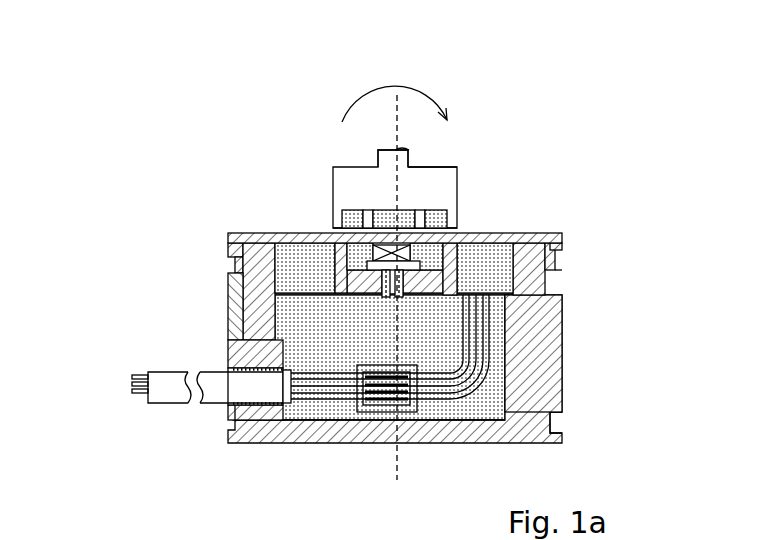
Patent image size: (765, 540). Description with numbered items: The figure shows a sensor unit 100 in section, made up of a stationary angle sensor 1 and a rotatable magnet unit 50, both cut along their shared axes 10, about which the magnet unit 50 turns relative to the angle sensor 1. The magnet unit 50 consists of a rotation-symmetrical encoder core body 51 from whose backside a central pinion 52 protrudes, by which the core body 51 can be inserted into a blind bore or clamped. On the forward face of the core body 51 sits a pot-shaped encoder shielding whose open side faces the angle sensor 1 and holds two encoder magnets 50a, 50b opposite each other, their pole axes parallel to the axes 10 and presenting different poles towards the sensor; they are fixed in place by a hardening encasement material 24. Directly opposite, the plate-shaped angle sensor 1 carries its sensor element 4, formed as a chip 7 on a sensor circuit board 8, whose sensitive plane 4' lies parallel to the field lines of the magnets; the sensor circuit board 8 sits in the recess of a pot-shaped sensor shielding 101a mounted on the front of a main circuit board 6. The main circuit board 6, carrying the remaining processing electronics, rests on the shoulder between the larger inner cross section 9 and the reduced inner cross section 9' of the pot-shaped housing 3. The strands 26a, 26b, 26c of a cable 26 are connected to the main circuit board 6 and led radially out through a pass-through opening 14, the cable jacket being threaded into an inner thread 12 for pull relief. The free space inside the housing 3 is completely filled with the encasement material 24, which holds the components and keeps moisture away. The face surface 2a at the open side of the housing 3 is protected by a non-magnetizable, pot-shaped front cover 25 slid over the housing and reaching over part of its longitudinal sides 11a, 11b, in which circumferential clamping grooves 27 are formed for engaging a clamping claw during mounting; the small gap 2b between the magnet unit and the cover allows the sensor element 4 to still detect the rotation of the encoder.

The angle sensor 1 is at (592, 290).
The face surface 2a is at (567, 236).
The gap between knob and cover 2b is at (474, 218).
The housing 3 is at (230, 435).
The sensor element 4 is at (537, 207).
The sensitive plane 4' is at (241, 189).
The main circuit board 6 is at (300, 290).
The chip 7 is at (395, 281).
The sensor circuit board 8 is at (315, 235).
The inner cross section 9 is at (417, 254).
The reduced inner cross section 9' is at (559, 292).
The axes 10 is at (397, 460).
The longitudinal side 11a is at (236, 353).
The longitudinal side 11b is at (562, 382).
The inner thread 12 is at (258, 403).
The pass-through opening 14 is at (243, 402).
The encasement material 24 is at (366, 226).
The front cover 25 is at (243, 300).
The cable 26 is at (165, 390).
The strand 26a is at (262, 367).
The strand 26b is at (313, 378).
The strand 26c is at (305, 400).
The clamping grooves 27 is at (552, 418).
The magnet unit 50 is at (493, 131).
The encoder magnet 50a is at (333, 197).
The encoder magnet 50b is at (420, 211).
The encoder core body 51 is at (438, 174).
The central pinion 52 is at (377, 152).
The sensor unit 100 is at (243, 105).
The sensor shielding 101a is at (333, 272).